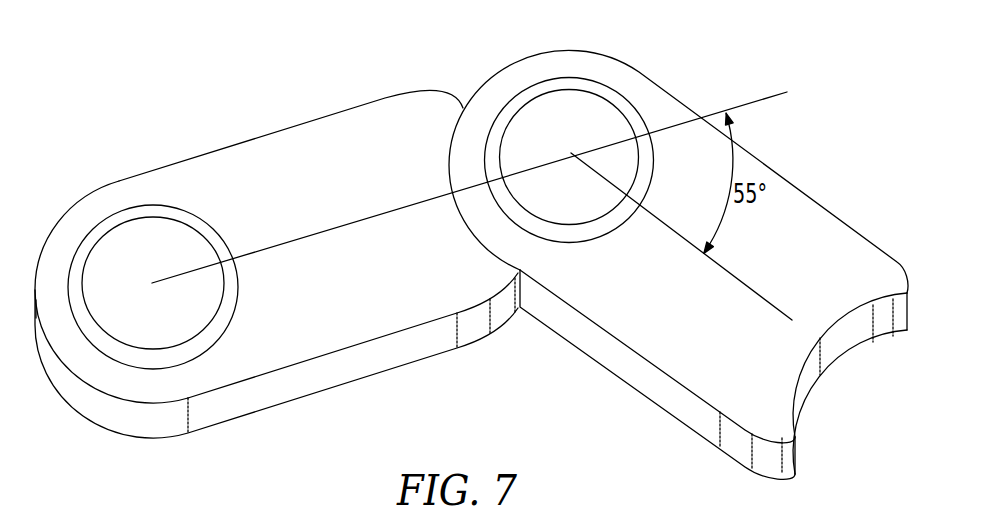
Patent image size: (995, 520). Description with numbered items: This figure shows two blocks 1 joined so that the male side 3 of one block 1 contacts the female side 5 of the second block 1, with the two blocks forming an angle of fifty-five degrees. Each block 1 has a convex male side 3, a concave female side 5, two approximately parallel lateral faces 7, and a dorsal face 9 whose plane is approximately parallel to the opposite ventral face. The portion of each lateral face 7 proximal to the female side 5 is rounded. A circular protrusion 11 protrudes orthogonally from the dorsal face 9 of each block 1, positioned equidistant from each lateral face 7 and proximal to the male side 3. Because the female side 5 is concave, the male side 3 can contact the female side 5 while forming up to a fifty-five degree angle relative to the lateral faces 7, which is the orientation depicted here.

The block 1 is at (471, 256).
The male side 3 is at (48, 357).
The female side 5 is at (827, 359).
The lateral faces 7 is at (398, 355).
The dorsal face 9 is at (263, 183).
The circular protrusion 11 is at (145, 240).